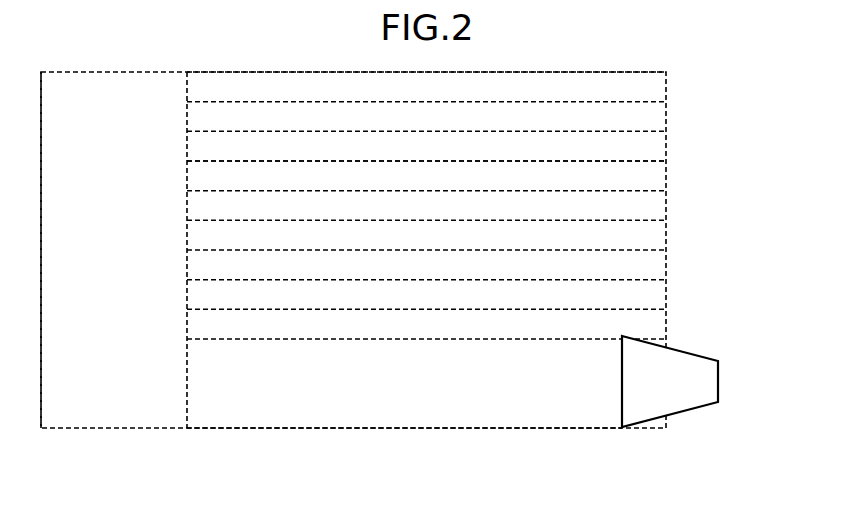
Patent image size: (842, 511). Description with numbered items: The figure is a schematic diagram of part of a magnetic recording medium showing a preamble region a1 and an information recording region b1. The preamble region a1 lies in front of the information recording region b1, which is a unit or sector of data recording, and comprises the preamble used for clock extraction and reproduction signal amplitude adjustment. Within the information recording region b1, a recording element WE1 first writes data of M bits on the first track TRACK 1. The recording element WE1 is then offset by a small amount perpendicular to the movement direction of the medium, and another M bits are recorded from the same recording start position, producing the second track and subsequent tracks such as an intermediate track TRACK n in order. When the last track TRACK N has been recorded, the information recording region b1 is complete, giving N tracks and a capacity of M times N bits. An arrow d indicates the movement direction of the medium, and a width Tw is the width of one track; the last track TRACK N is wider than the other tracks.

The first track TRACK 1 is at (655, 78).
The nth track TRACK n is at (658, 168).
The last track N TRACK N is at (548, 410).
The recording element WE1 is at (690, 406).
The preamble region a1 is at (112, 413).
The information recording region b1 is at (451, 428).
The arrow indicating movement direction d is at (256, 472).
The track width Tw is at (284, 349).